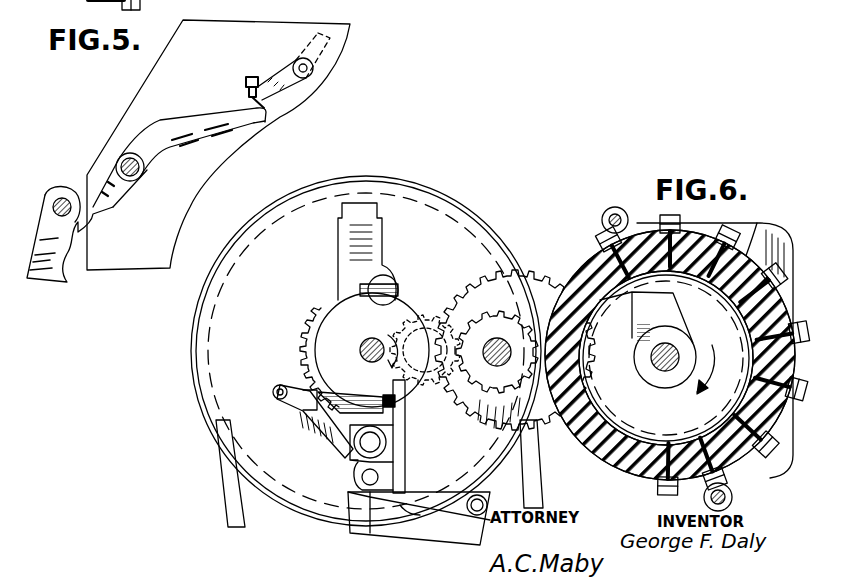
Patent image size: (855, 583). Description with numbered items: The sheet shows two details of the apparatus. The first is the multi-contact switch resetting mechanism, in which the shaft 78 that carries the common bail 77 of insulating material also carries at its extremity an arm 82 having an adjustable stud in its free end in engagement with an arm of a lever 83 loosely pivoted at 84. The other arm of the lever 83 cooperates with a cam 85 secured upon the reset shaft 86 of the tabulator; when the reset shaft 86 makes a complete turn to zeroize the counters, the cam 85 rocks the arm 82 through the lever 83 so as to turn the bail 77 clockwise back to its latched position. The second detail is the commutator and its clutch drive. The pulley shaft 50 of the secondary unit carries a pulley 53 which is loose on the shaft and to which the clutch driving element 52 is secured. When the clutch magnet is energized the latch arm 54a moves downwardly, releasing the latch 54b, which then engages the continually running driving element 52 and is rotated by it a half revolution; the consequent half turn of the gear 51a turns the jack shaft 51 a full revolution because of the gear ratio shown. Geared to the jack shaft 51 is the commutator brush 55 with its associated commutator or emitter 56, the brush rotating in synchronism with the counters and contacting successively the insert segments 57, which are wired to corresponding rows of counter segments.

In FIG. 6, the pulley shaft 50 is at (372, 350).
In FIG. 6, the jack shaft 51 is at (500, 338).
In FIG. 6, the gear 51a is at (420, 295).
In FIG. 6, the driving element 52 is at (394, 404).
In FIG. 6, the pulley 53 is at (300, 500).
In FIG. 6, the latch arm 54a is at (360, 530).
In FIG. 6, the latch 54b is at (338, 430).
In FIG. 6, the commutator brush 55 is at (647, 320).
In FIG. 6, the commutator 56 is at (757, 238).
In FIG. 6, the insert segment 57 is at (735, 485).
In FIG. 5, the bail 77 is at (322, 36).
In FIG. 5, the shaft 78 is at (315, 68).
In FIG. 5, the arm 82 is at (286, 76).
In FIG. 5, the lever 83 is at (209, 118).
In FIG. 5, the pivot 84 is at (116, 160).
In FIG. 5, the cam 85 is at (86, 227).
In FIG. 5, the reset shaft 86 is at (72, 194).